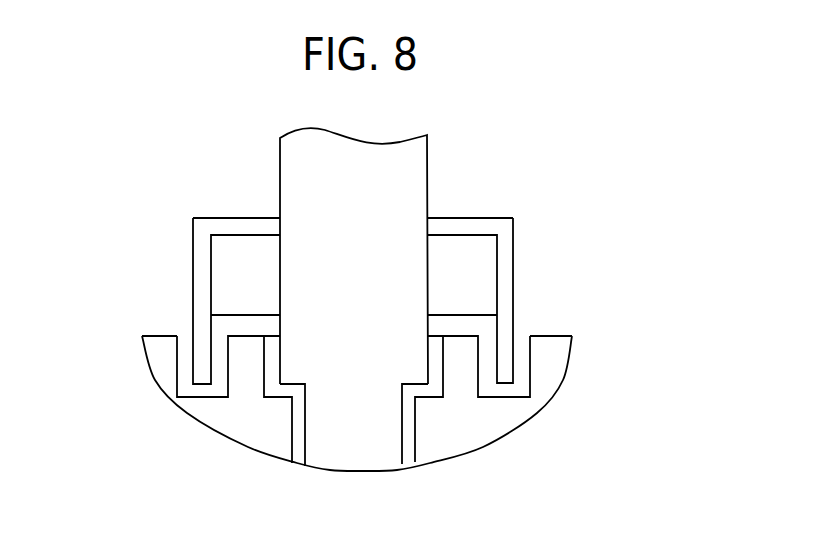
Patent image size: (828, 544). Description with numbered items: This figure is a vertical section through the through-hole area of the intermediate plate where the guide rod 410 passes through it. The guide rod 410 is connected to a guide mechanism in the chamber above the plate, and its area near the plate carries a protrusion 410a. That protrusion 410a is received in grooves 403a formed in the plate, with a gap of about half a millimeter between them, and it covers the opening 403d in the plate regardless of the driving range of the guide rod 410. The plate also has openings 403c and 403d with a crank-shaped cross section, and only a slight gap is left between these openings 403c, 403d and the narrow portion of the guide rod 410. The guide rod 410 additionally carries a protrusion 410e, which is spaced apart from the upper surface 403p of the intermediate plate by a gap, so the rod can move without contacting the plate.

The guide rod 410 is at (429, 170).
The protrusion 410a is at (514, 250).
The protrusion 410e is at (230, 257).
The groove 403a is at (523, 359).
The upper surface 403p is at (247, 334).
The opening 403d is at (443, 362).
The opening 403c is at (415, 425).